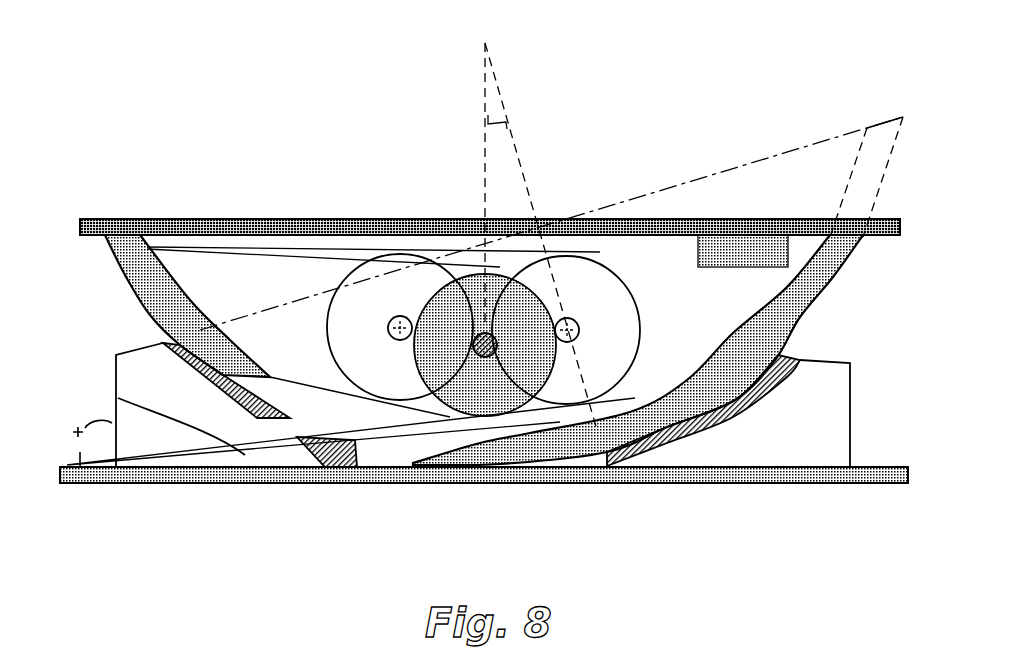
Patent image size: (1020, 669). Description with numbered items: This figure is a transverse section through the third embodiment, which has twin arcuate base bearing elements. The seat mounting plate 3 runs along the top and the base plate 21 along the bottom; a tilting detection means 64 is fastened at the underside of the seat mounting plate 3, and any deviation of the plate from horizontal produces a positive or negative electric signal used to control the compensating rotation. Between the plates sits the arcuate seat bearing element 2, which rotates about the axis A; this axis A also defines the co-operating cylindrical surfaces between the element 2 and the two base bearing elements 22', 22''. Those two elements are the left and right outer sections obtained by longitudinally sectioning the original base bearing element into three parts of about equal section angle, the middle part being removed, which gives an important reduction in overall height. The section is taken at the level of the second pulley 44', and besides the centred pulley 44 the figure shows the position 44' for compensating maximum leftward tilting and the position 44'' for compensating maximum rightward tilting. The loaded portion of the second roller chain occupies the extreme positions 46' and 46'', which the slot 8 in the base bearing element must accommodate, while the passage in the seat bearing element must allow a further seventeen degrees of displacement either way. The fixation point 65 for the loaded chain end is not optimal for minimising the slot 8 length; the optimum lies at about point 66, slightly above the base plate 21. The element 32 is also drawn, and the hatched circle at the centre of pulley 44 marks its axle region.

The seat mounting plate 3 is at (303, 219).
The base plate 21 is at (717, 475).
The tilting detection means 64 is at (723, 255).
The arcuate seat bearing element 2 is at (575, 437).
The left arcuate base bearing element 22' is at (176, 353).
The right arcuate base bearing element 22'' is at (761, 385).
The extreme position of loaded chain portion 46' is at (285, 493).
The extreme position of loaded chain portion 46'' is at (152, 402).
The slot 8 is at (418, 440).
The fixation point 65 is at (78, 453).
The optimum fixation point 66 is at (112, 423).
The pulley 44 is at (468, 414).
The second pulley position 44' is at (400, 274).
The pulley position 44'' is at (566, 280).
The axle 32 is at (310, 428).
The axis A is at (487, 43).